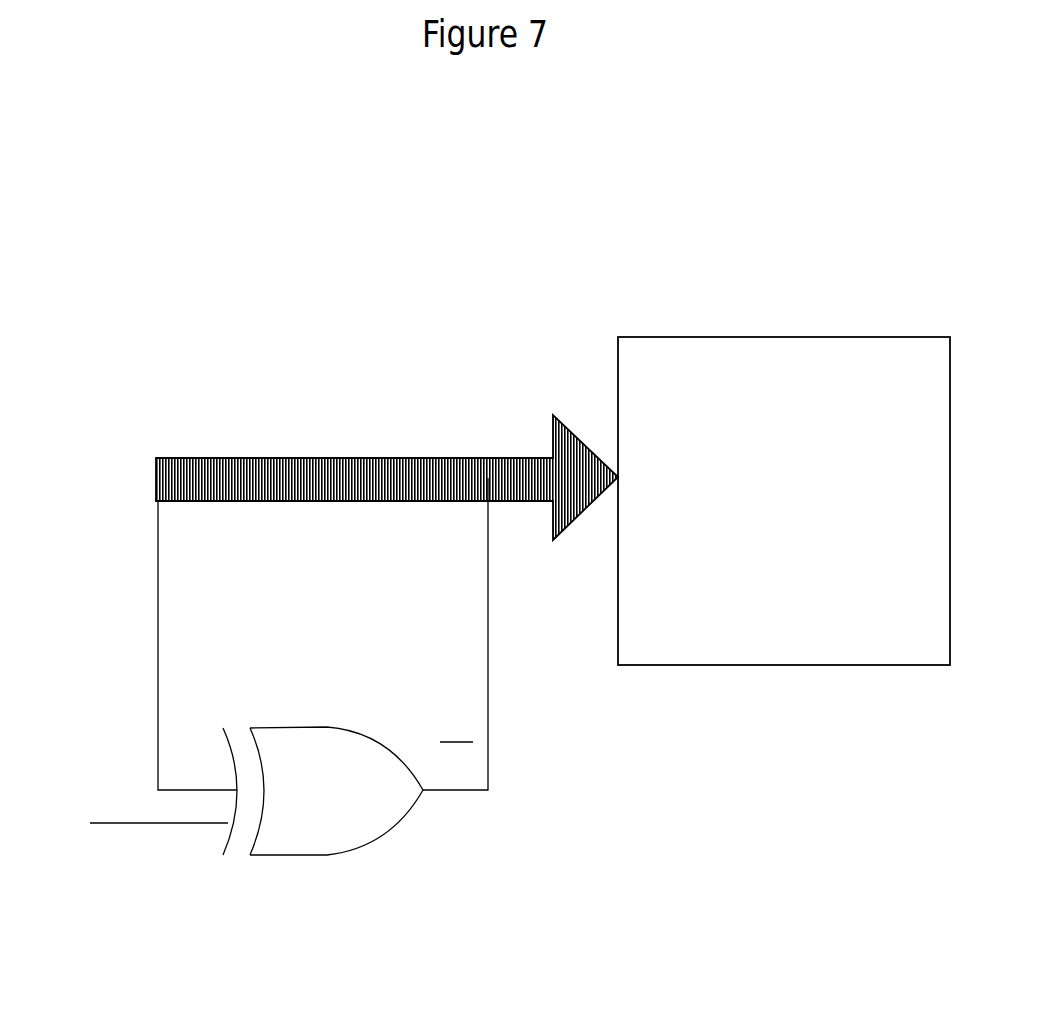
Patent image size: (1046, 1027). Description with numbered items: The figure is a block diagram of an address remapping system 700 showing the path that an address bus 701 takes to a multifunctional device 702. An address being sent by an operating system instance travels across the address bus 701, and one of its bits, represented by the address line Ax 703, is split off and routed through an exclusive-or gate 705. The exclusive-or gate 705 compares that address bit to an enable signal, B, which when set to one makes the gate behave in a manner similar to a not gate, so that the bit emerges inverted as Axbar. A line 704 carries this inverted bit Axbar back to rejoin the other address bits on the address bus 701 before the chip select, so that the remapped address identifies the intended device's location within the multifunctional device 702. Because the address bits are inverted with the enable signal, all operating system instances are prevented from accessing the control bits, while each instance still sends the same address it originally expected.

The address remapping system 700 is at (403, 312).
The address bus 701 is at (225, 477).
The multifunctional device 702 is at (783, 667).
The address line Ax 703 is at (156, 605).
The line 704 is at (488, 758).
The exclusive-or gate 705 is at (347, 850).